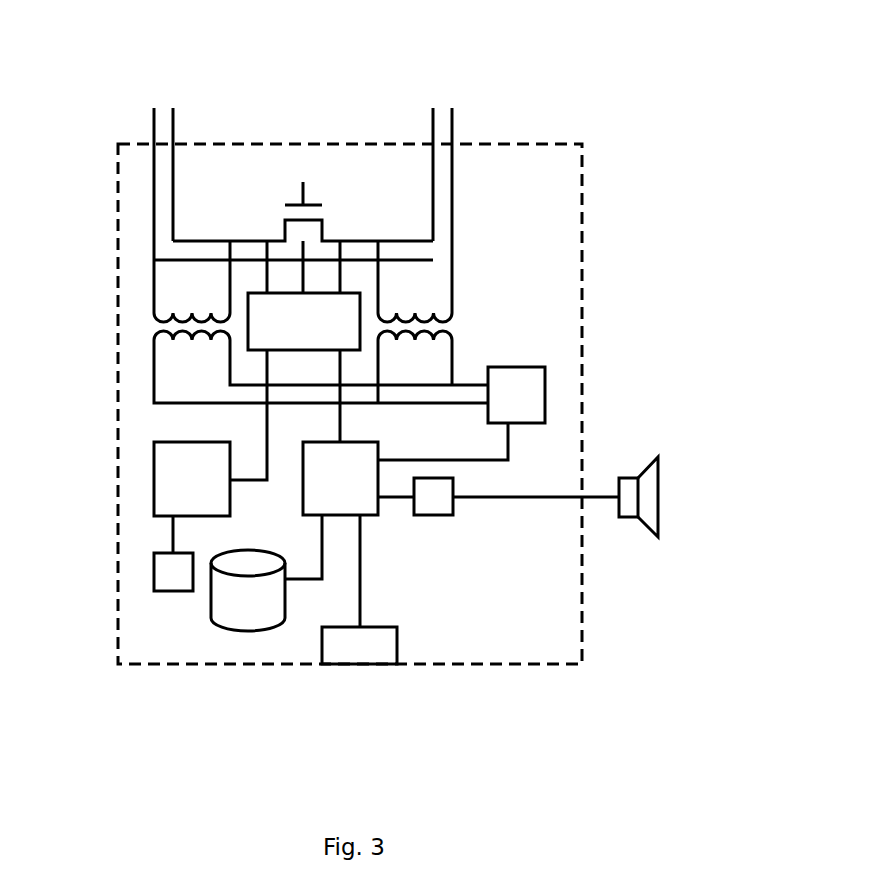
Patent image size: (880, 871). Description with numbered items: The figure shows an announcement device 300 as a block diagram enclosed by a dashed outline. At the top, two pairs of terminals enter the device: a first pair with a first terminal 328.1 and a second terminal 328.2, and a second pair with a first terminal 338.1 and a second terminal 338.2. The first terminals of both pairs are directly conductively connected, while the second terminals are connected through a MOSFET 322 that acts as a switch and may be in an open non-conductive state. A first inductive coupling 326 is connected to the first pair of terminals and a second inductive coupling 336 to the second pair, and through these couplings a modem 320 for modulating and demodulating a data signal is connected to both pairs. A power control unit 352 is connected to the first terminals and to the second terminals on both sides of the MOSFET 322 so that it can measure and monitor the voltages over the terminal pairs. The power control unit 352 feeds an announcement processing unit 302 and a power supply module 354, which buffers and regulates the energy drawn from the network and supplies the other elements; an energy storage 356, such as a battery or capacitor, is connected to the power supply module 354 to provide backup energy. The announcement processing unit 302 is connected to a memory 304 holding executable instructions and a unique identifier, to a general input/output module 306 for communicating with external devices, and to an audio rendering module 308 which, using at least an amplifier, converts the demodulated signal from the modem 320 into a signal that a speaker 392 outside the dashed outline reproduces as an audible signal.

The announcement device 300 is at (210, 664).
The announcement processing unit 302 is at (380, 503).
The memory 304 is at (212, 590).
The general input/output module 306 is at (358, 645).
The audio rendering module 308 is at (433, 515).
The modem 320 is at (545, 378).
The MOSFET 322 is at (285, 217).
The first inductive coupling 326 is at (154, 322).
The first terminal 328.1 is at (153, 127).
The second terminal 328.2 is at (172, 127).
The second inductive coupling 336 is at (450, 320).
The first terminal 338.1 is at (433, 127).
The second terminal 338.2 is at (452, 127).
The power control unit 352 is at (360, 297).
The power supply module 354 is at (154, 472).
The energy storage 356 is at (154, 570).
The speaker 392 is at (658, 497).